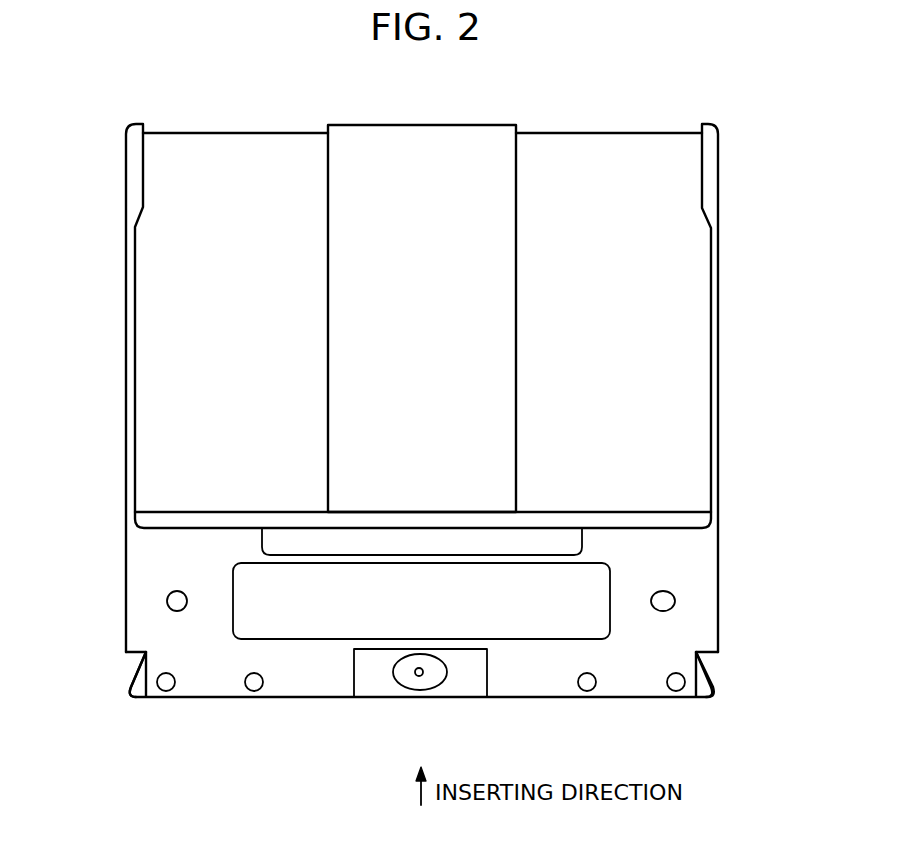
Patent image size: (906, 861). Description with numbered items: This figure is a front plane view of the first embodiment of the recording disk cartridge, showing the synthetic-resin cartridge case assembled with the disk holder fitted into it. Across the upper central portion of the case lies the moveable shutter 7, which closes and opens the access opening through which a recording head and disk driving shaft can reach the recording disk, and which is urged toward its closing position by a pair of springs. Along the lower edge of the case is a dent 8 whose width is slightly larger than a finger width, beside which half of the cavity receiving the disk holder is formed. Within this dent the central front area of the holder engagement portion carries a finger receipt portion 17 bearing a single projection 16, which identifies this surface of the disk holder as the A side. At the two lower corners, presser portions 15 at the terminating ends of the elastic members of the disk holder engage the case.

The moveable shutter 7 is at (421, 133).
The presser portion 15 is at (137, 686).
The dent 8 is at (354, 677).
The finger receipt portion 17 is at (405, 666).
The projection 16 is at (422, 668).